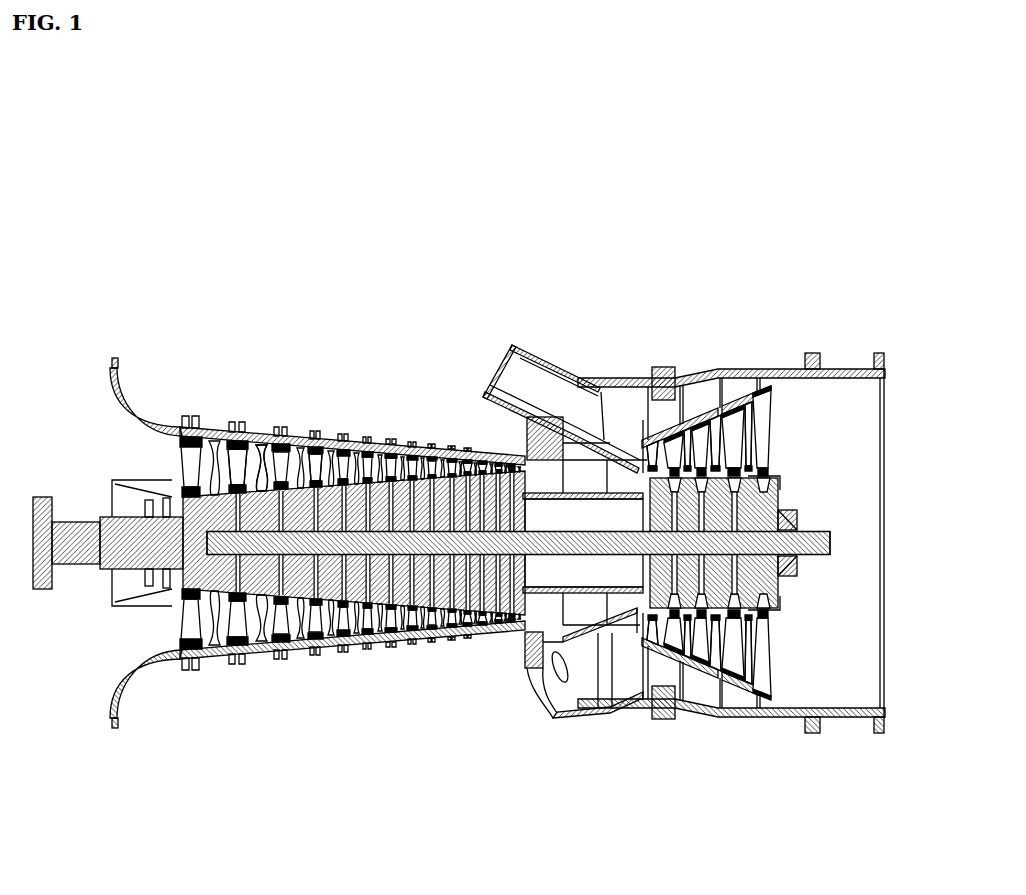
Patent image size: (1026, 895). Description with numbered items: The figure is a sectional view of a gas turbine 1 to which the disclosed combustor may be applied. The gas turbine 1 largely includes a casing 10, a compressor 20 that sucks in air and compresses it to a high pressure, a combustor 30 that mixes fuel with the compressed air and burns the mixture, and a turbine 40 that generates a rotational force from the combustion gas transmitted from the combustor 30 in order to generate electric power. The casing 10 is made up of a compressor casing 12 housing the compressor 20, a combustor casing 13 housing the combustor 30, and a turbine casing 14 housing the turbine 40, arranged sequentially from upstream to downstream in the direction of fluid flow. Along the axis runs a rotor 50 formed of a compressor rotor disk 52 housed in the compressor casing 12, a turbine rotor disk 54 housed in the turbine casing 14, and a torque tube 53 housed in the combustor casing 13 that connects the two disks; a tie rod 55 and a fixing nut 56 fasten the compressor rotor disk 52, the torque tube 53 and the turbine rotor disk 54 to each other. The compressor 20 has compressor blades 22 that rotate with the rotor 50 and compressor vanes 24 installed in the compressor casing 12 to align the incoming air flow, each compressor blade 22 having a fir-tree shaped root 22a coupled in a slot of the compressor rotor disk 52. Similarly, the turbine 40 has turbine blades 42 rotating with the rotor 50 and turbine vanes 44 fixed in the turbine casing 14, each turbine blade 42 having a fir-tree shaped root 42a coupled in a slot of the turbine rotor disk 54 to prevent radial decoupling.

The gas turbine 1 is at (133, 148).
The casing 10 is at (683, 242).
The compressor casing 12 is at (415, 450).
The combustor casing 13 is at (572, 378).
The turbine casing 14 is at (693, 380).
The compressor 20 is at (250, 351).
The compressor blade 22 is at (262, 475).
The root 22a is at (320, 447).
The compressor vane 24 is at (237, 458).
The combustor 30 is at (503, 362).
The turbine 40 is at (743, 300).
The turbine blade 42 is at (778, 432).
The root 42a is at (777, 478).
The turbine vane 44 is at (739, 428).
The rotor 50 is at (783, 785).
The compressor rotor disk 52 is at (400, 590).
The torque tube 53 is at (590, 570).
The turbine rotor disk 54 is at (720, 578).
The tie rod 55 is at (480, 560).
The fixing nut 56 is at (790, 578).